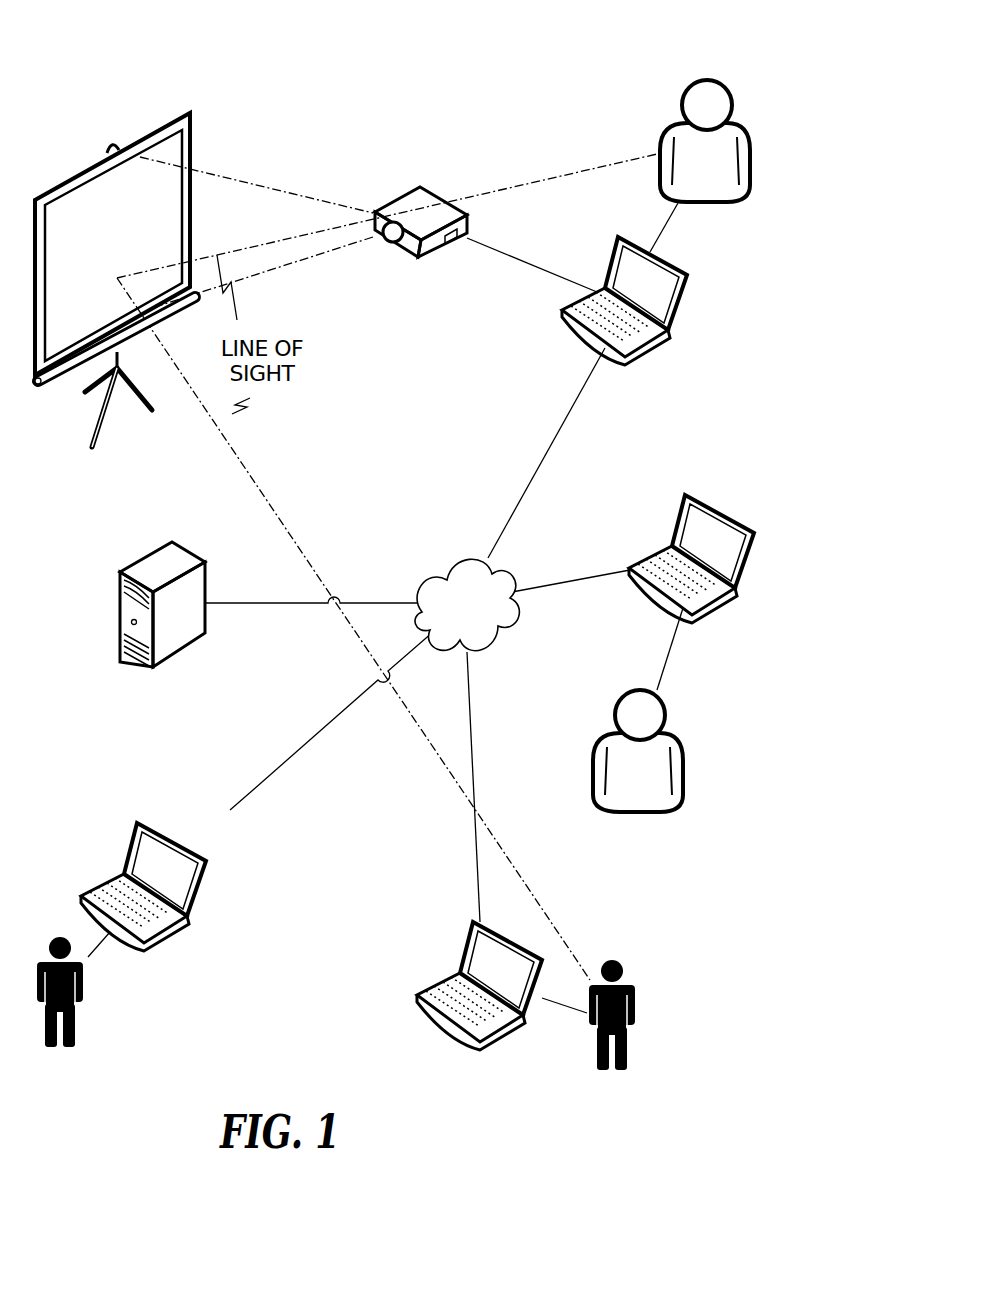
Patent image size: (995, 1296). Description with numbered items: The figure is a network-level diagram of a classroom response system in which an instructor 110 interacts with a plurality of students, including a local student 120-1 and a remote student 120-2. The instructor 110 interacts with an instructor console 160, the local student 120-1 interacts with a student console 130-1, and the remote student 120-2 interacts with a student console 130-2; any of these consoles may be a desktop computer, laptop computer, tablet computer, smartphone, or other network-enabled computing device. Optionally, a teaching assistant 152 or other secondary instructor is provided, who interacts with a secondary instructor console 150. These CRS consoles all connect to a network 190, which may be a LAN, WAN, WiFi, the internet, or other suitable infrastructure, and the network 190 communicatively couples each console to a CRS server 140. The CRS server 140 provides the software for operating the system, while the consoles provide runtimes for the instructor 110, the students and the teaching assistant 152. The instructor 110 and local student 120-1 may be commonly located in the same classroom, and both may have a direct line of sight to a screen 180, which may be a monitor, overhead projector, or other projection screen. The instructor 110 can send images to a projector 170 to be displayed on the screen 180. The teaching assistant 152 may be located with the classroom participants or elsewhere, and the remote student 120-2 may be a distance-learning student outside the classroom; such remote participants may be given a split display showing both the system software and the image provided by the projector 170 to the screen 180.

The instructor 110 is at (720, 82).
The local student 120-1 is at (637, 1020).
The remote student 120-2 is at (82, 995).
The student console 130-1 is at (440, 1022).
The student console 130-2 is at (187, 918).
The CRS server 140 is at (145, 665).
The secondary instructor console 150 is at (737, 600).
The teaching assistant 152 is at (680, 757).
The instructor console 160 is at (703, 307).
The projector 170 is at (440, 196).
The screen 180 is at (192, 110).
The network 190 is at (510, 638).